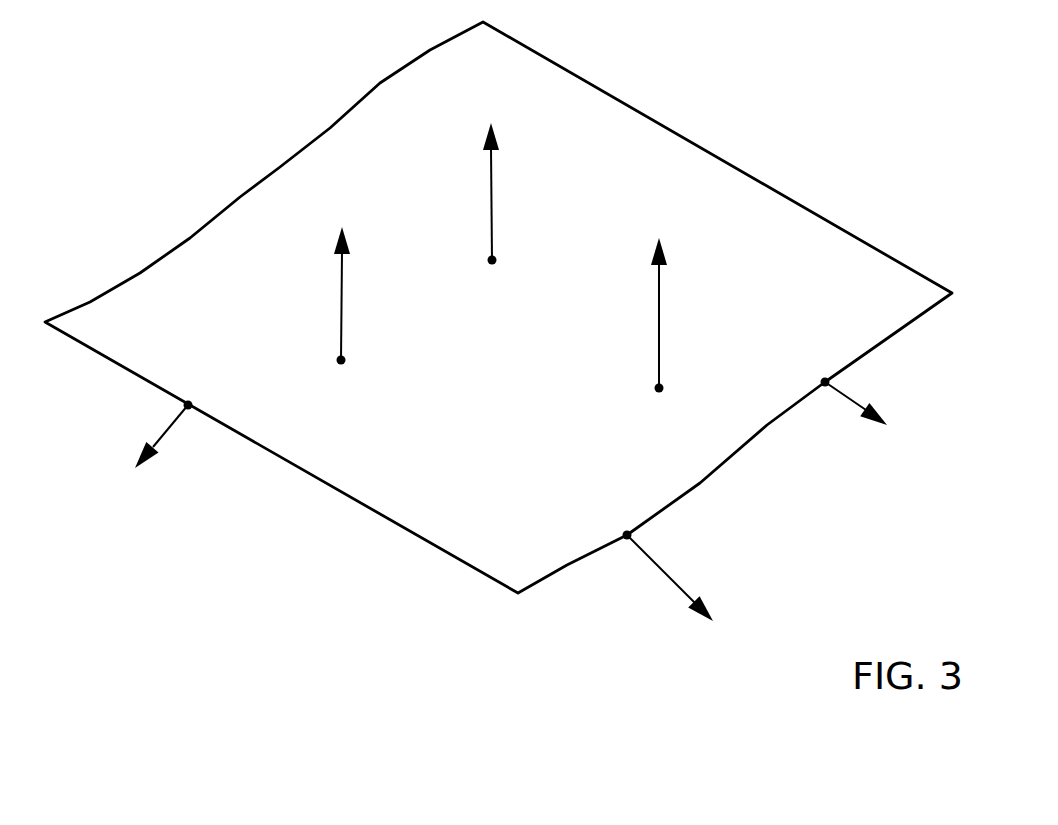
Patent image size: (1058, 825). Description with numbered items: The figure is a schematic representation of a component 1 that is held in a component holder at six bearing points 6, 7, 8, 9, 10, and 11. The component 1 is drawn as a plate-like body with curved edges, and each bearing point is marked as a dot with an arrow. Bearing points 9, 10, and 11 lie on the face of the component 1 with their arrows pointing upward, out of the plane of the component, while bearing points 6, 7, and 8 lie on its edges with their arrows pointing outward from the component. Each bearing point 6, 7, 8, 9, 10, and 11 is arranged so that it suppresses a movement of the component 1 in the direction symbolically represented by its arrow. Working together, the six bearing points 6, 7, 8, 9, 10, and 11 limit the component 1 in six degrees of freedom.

The component 1 is at (498, 307).
The bearing point 6 is at (171, 421).
The bearing point 7 is at (665, 559).
The bearing point 8 is at (852, 386).
The bearing point 9 is at (667, 316).
The bearing point 10 is at (507, 194).
The bearing point 11 is at (358, 296).